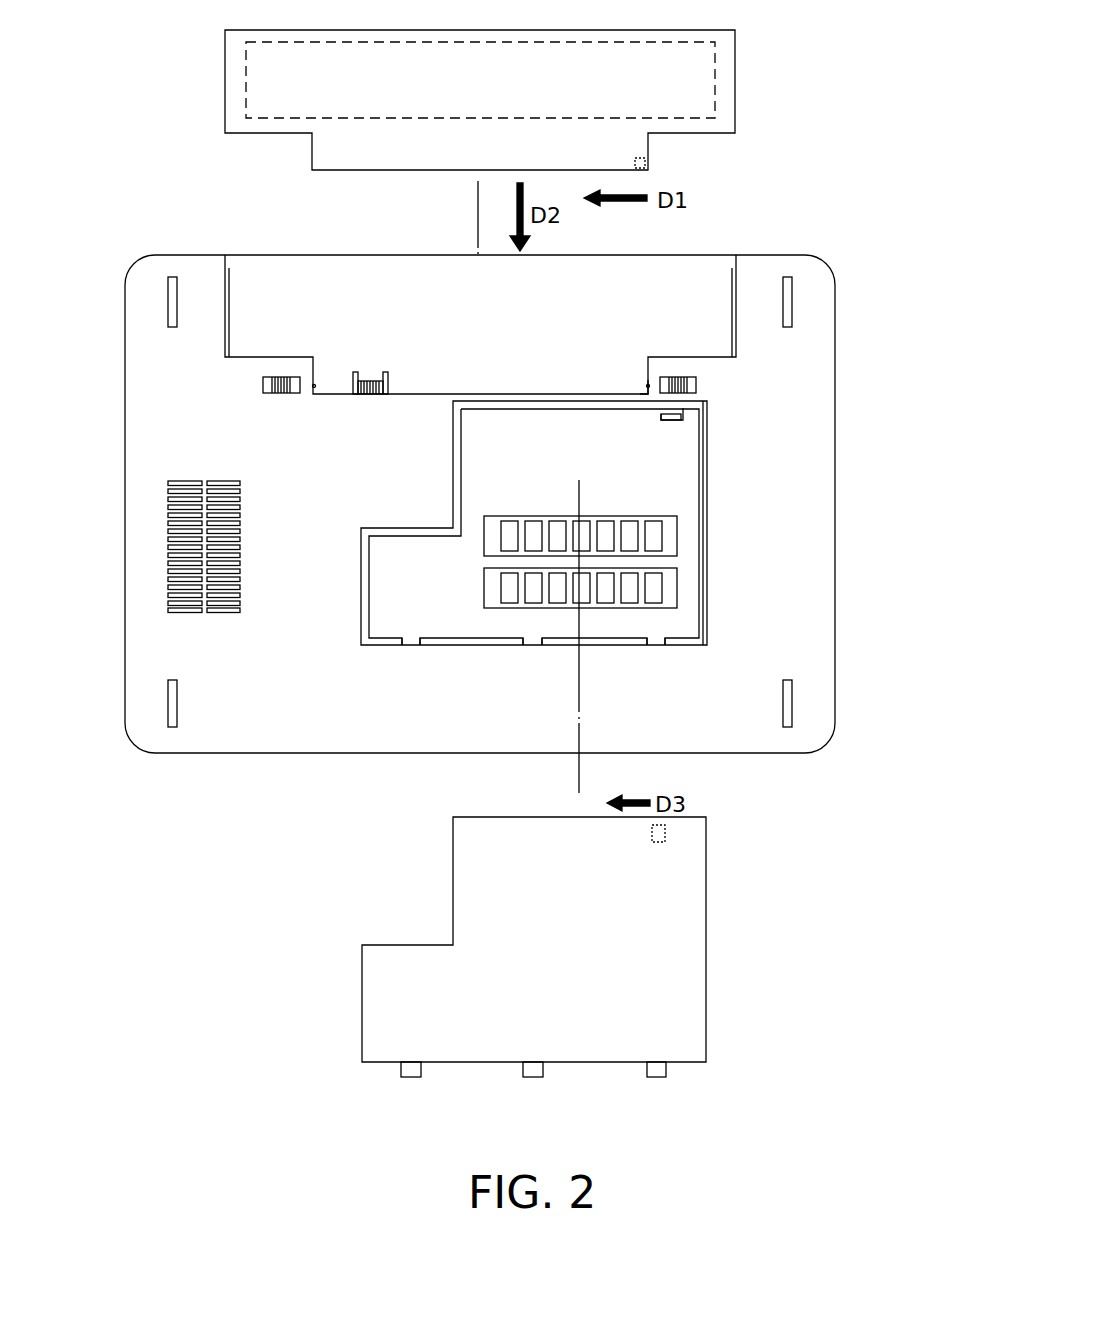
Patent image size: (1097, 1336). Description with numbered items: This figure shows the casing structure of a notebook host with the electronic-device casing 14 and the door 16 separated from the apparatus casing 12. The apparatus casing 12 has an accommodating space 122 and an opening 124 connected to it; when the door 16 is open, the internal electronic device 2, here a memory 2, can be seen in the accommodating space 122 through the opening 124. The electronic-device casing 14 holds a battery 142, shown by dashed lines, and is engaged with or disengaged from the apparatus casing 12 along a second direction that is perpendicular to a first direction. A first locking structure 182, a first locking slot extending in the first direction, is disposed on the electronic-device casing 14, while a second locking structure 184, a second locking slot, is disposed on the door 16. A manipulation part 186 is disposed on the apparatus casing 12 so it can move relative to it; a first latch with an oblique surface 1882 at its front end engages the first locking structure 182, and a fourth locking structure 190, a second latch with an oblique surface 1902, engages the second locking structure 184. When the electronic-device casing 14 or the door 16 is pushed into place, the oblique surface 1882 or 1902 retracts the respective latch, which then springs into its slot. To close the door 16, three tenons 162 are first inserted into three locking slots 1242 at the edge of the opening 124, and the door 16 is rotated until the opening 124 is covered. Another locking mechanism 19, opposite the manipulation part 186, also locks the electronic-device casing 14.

The internal electronic device 2 is at (673, 590).
The apparatus casing 12 is at (762, 263).
The electronic-device casing 14 is at (733, 90).
The door 16 is at (683, 918).
The locking mechanism 19 is at (262, 384).
The accommodating space 122 is at (683, 483).
The opening 124 is at (708, 535).
The battery 142 is at (716, 62).
The tenons 162 is at (411, 1070).
The first locking structure 182 is at (646, 157).
The second locking structure 184 is at (667, 834).
The manipulation part 186 is at (696, 385).
The fourth locking structure 190 is at (683, 415).
The locking slots 1242 is at (410, 641).
The oblique surface 1882 is at (646, 384).
The oblique surface 1902 is at (670, 420).